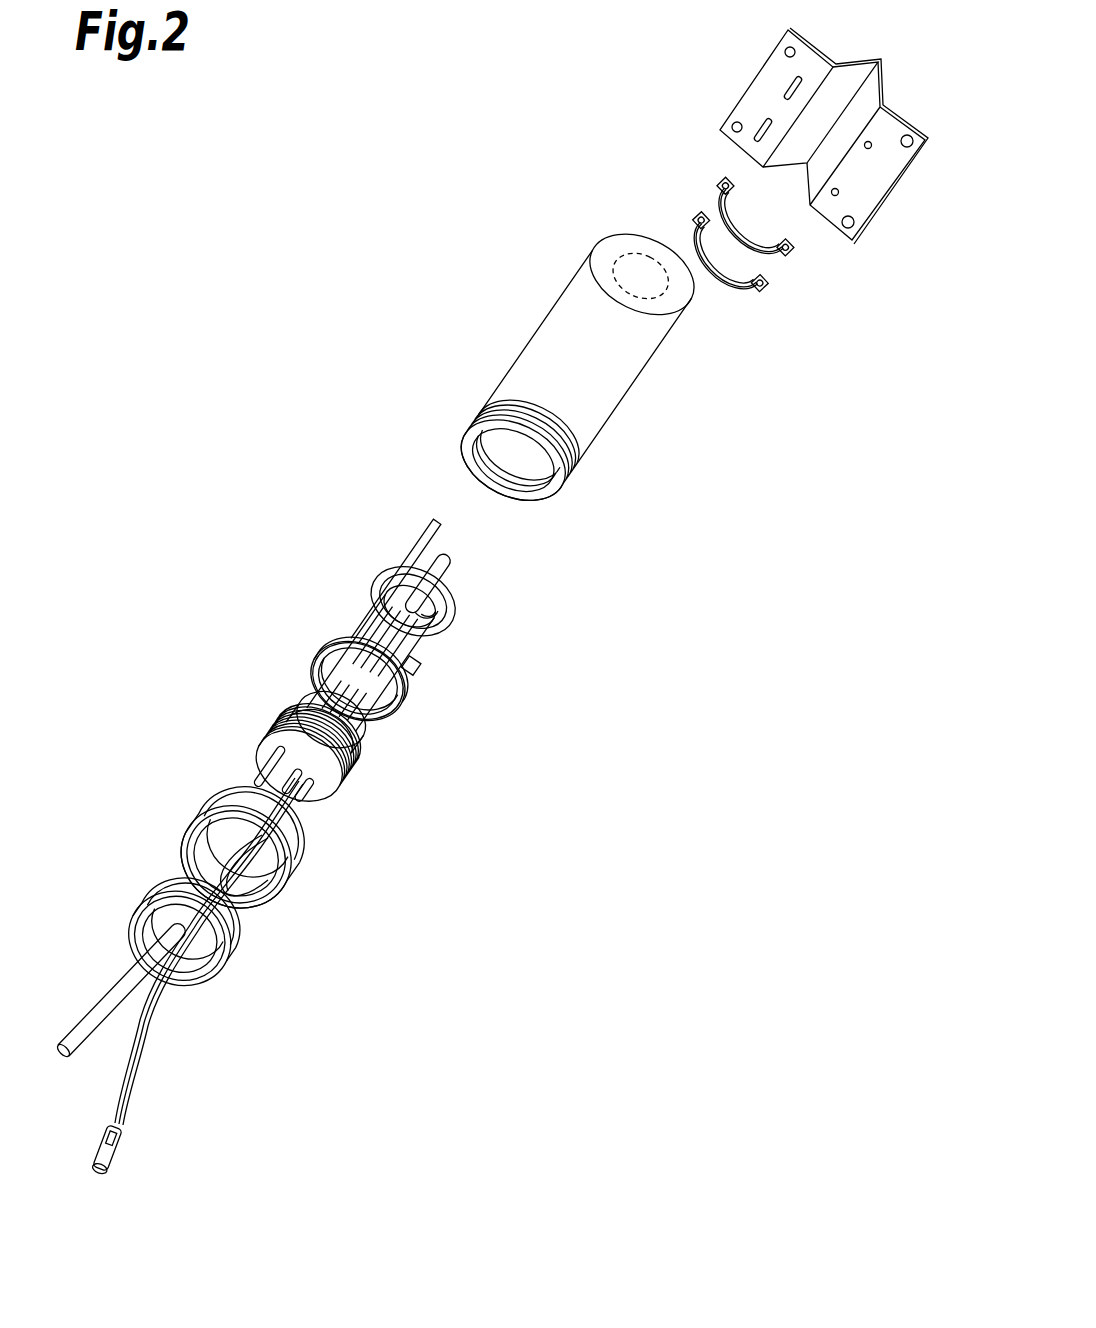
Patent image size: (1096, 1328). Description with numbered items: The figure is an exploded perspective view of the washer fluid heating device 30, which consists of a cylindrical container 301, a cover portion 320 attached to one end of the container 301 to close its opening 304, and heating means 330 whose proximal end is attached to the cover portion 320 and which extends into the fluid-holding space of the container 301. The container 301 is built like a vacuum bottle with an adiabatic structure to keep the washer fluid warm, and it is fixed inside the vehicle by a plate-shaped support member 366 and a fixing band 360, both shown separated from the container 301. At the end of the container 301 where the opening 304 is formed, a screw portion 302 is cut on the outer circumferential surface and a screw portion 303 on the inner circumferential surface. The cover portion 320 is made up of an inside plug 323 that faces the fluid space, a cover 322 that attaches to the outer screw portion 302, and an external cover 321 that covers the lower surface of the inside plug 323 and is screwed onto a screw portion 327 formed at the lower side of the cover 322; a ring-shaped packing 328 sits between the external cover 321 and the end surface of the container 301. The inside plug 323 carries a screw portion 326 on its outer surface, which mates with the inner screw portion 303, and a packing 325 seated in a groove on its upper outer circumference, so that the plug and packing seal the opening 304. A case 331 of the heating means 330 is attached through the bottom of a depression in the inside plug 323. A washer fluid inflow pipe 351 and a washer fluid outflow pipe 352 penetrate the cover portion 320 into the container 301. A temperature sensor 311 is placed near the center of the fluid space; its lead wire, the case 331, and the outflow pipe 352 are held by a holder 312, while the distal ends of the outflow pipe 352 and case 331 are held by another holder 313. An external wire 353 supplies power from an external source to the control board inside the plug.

The washer fluid heating device 30 is at (325, 221).
The container 301 is at (632, 406).
The screw portion 302 is at (567, 473).
The screw portion 303 is at (527, 510).
The opening 304 is at (468, 445).
The temperature sensor 311 is at (390, 703).
The holder 312 is at (367, 727).
The holder 313 is at (412, 665).
The cover portion 320 is at (452, 797).
The external cover 321 is at (228, 952).
The cover 322 is at (303, 857).
The inside plug 323 is at (327, 793).
The packing 325 is at (373, 578).
The screw portion 326 is at (264, 728).
The screw portion 327 is at (183, 818).
The ring-shaped packing 328 is at (316, 650).
The heating means 330 is at (440, 617).
The case 331 is at (450, 573).
The washer fluid inflow pipe 351 is at (70, 1062).
The washer fluid outflow pipe 352 is at (70, 1040).
The external wire 353 is at (127, 1112).
The fixing band 360 is at (790, 252).
The support member 366 is at (883, 190).